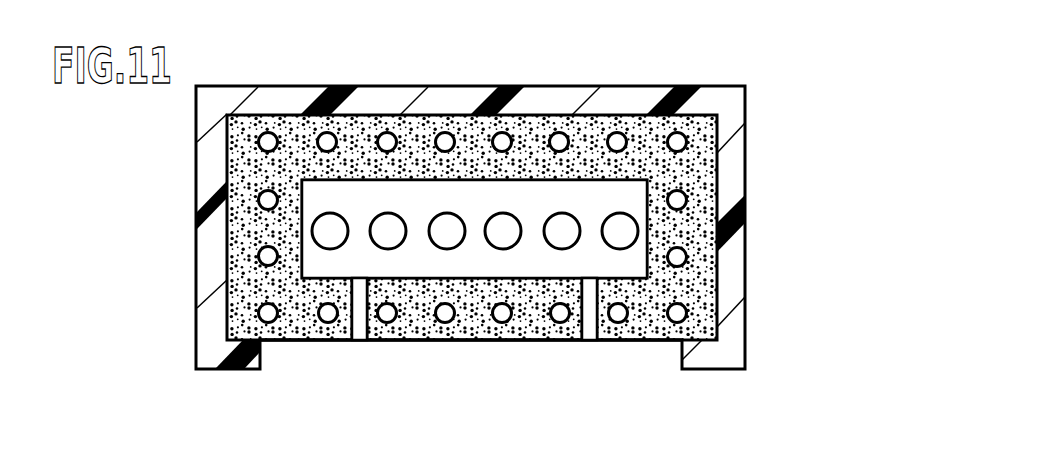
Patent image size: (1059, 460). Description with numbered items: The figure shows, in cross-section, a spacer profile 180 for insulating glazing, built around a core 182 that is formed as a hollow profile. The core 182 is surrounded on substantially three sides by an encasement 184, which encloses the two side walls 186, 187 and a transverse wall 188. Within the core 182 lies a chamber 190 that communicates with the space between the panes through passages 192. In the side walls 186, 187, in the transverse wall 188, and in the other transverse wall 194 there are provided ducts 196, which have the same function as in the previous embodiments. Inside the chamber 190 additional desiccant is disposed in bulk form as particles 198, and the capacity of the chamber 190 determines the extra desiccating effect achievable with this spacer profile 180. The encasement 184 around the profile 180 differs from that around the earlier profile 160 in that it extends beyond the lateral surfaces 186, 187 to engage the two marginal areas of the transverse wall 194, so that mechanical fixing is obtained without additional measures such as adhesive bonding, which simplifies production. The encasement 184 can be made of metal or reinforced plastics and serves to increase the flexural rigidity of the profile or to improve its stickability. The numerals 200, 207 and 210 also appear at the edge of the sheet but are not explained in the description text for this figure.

The spacer profile 180 is at (783, 84).
The core 182 is at (427, 373).
The encasement 184 is at (738, 287).
The side wall 186 is at (155, 182).
The side wall 187 is at (790, 190).
The transverse wall 188 is at (552, 72).
The chamber 190 is at (583, 197).
The passages 192 is at (357, 342).
The transverse wall 194 is at (285, 342).
The ducts 196 is at (445, 140).
The particles 198 is at (570, 222).
The profile 160 is at (727, 9).
The element 200 is at (852, 449).
The element 207 is at (761, 444).
The element 210 is at (623, 451).